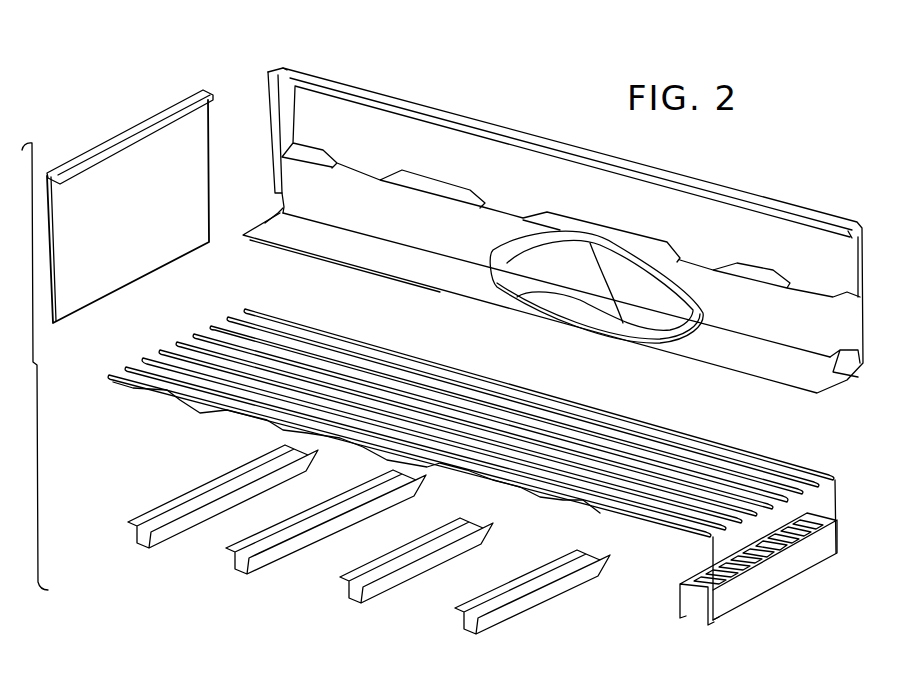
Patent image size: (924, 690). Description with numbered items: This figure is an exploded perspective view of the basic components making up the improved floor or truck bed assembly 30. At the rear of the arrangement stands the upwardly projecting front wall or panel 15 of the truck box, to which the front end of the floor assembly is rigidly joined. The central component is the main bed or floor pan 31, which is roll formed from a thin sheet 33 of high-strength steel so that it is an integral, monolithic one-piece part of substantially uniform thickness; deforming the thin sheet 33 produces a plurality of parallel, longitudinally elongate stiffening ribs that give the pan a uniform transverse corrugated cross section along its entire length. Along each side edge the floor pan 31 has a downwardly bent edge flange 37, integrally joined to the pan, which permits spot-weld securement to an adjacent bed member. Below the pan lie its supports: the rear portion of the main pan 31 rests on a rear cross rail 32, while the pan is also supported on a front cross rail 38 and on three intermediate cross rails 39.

The front wall or panel 15 is at (97, 147).
The floor or truck bed assembly 30 is at (219, 72).
The main bed or floor pan 31 is at (684, 418).
The rear cross rail 32 is at (722, 603).
The thin sheet 33 is at (583, 503).
The edge flange 37 is at (837, 478).
The front cross rail 38 is at (147, 545).
The intermediate cross rails 39 is at (233, 572).